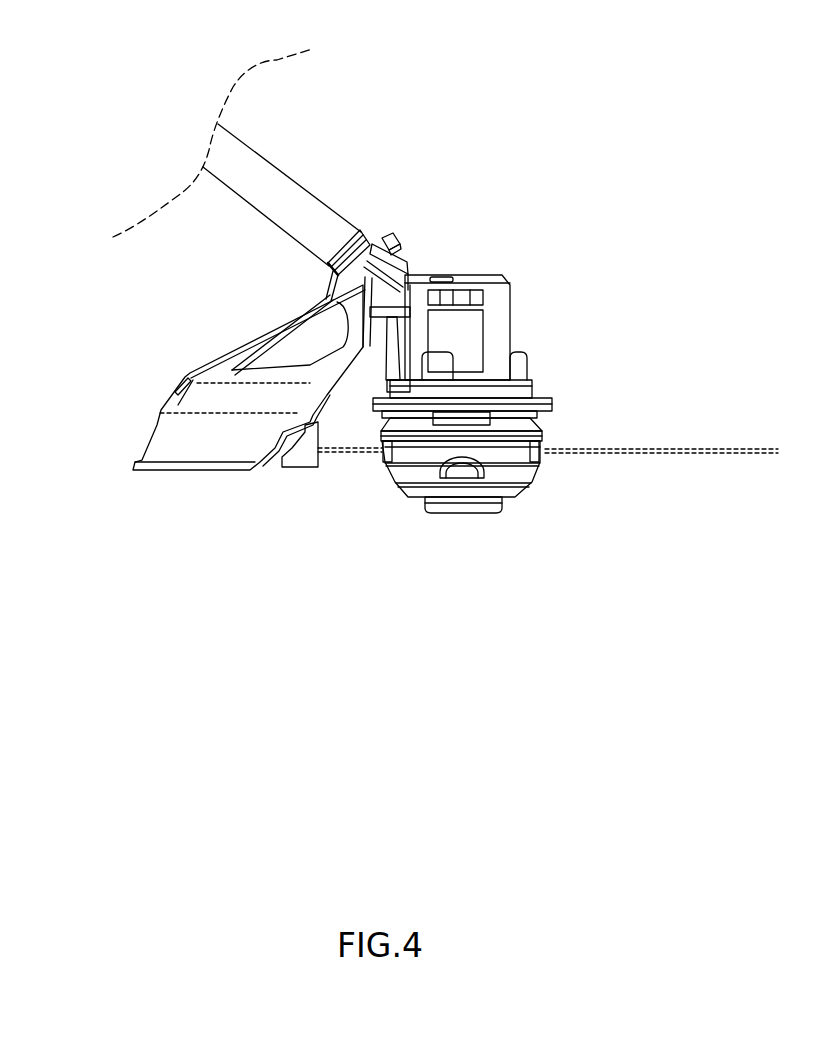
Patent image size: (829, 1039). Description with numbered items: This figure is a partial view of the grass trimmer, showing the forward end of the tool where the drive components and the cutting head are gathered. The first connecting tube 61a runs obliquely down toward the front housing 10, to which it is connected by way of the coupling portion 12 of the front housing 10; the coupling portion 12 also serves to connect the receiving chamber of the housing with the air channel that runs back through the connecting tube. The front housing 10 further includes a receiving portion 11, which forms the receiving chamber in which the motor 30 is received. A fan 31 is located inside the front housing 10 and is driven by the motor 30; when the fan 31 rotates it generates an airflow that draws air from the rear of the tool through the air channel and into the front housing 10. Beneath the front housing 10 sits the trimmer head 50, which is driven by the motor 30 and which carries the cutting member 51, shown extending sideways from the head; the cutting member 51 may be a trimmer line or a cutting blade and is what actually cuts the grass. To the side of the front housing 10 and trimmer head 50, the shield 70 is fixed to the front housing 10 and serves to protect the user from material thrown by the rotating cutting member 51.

The first connecting tube 61a is at (293, 172).
The coupling portion 12 is at (403, 260).
The front housing 10 is at (497, 270).
The receiving portion 11 is at (513, 287).
The fan 31 is at (453, 287).
The motor 30 is at (490, 327).
The trimmer head 50 is at (540, 485).
The cutting member 51 is at (665, 453).
The shield 70 is at (148, 430).